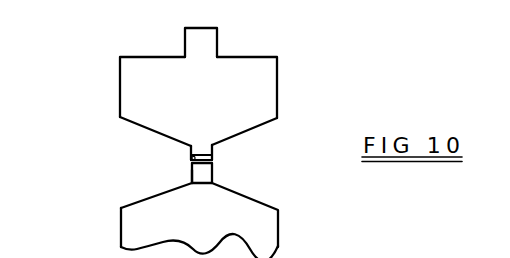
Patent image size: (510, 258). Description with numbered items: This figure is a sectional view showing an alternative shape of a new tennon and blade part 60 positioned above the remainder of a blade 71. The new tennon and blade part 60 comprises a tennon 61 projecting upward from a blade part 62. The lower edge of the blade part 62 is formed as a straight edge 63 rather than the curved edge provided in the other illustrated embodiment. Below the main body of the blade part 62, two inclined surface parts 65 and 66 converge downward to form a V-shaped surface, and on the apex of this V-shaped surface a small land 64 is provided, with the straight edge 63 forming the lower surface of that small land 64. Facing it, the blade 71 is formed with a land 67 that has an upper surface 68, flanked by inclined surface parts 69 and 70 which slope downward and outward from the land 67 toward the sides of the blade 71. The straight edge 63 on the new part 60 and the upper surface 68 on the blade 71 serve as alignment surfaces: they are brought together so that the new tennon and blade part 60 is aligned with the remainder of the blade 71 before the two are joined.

The new tennon and blade part 60 is at (286, 61).
The tennon 61 is at (208, 50).
The blade part 62 is at (270, 100).
The straight edge 63 is at (213, 174).
The small land 64 is at (210, 155).
The inclined surface part 65 is at (270, 126).
The inclined surface part 66 is at (132, 125).
The land 67 is at (204, 178).
The upper surface 68 is at (191, 157).
The inclined surface part 69 is at (270, 203).
The inclined surface part 70 is at (147, 203).
The blade 71 is at (284, 241).